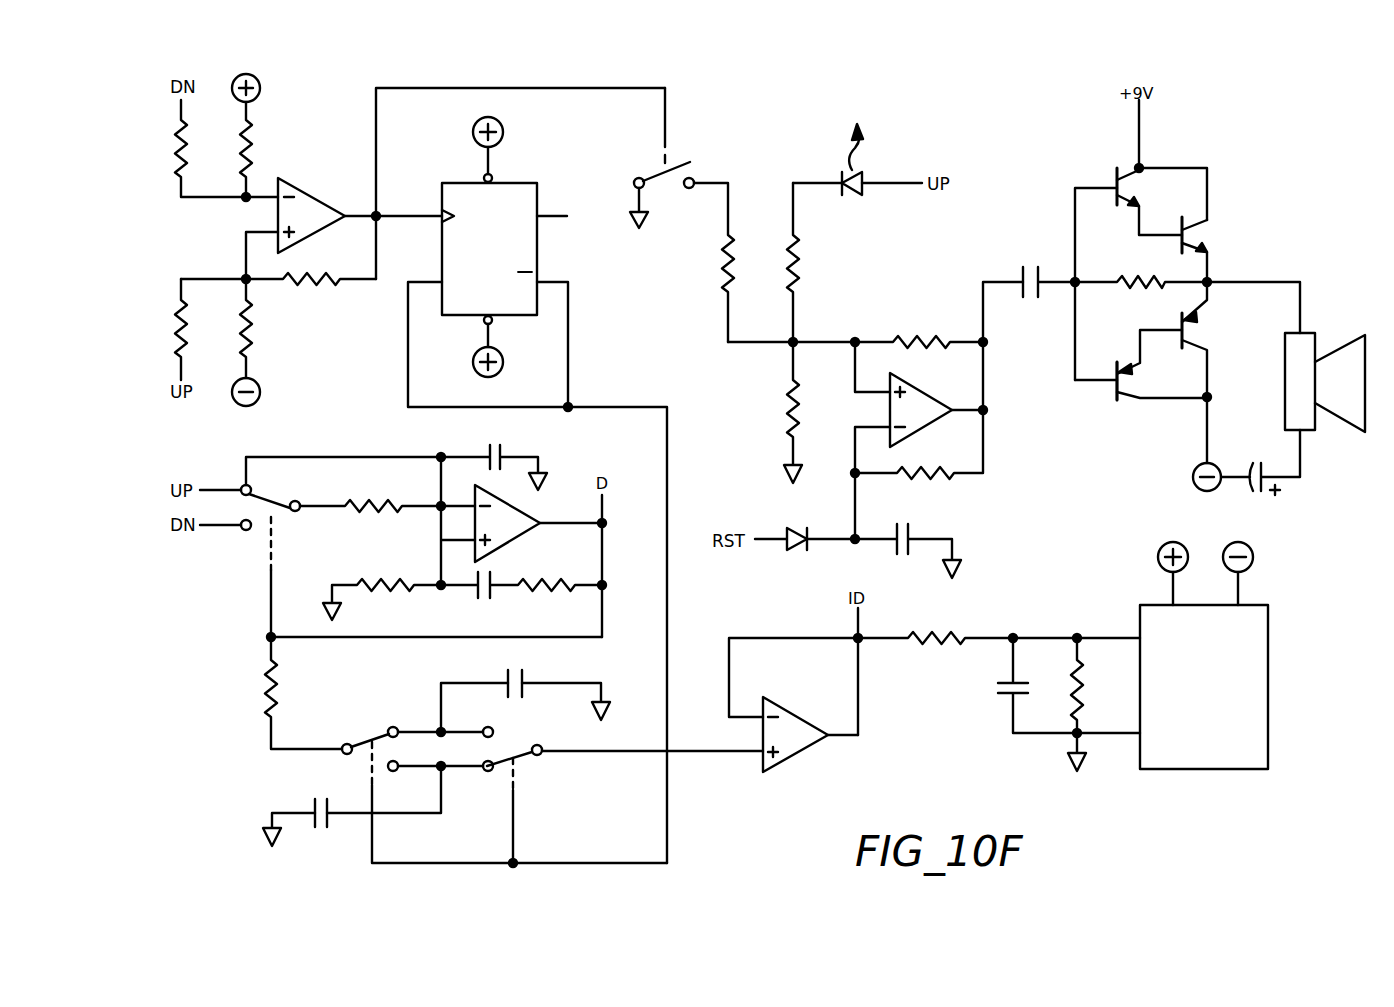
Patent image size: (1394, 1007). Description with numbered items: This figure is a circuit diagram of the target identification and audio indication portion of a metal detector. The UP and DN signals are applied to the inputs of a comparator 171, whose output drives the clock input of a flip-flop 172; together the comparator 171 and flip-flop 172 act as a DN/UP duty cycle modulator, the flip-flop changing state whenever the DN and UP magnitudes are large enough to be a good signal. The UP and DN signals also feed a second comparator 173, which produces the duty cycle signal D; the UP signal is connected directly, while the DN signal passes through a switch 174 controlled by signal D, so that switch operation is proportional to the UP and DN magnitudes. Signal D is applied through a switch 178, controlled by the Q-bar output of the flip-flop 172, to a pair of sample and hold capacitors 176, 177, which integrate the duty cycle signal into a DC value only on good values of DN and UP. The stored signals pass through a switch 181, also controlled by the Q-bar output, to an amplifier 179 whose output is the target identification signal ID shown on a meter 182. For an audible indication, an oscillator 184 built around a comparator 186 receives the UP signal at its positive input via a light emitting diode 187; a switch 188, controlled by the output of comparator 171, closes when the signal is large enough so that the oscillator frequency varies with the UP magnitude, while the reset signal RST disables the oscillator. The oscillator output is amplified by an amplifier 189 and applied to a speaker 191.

The comparator 171 is at (318, 197).
The flip-flop 172 is at (537, 243).
The second comparator 173 is at (530, 512).
The switch 174 is at (271, 503).
The sample and hold capacitor 176 is at (527, 690).
The sample and hold capacitor 177 is at (314, 808).
The switch 178 is at (378, 740).
The amplifier 179 is at (805, 713).
The switch 181 is at (523, 755).
The meter 182 is at (1140, 618).
The oscillator 184 is at (996, 452).
The comparator 186 is at (925, 396).
The light emitting diode 187 is at (853, 196).
The switch 188 is at (680, 162).
The amplifier 189 is at (1087, 173).
The speaker 191 is at (1335, 343).